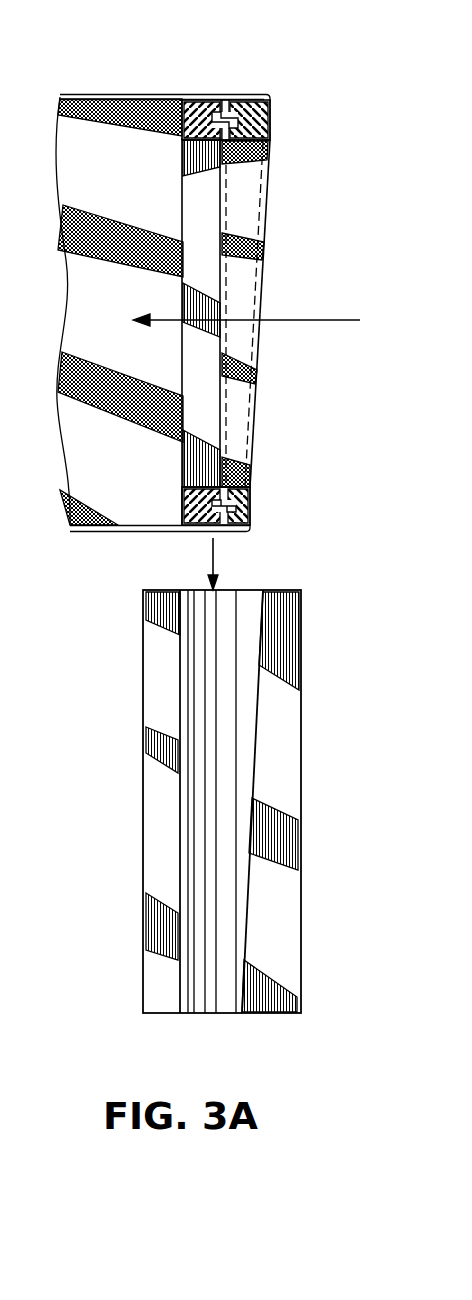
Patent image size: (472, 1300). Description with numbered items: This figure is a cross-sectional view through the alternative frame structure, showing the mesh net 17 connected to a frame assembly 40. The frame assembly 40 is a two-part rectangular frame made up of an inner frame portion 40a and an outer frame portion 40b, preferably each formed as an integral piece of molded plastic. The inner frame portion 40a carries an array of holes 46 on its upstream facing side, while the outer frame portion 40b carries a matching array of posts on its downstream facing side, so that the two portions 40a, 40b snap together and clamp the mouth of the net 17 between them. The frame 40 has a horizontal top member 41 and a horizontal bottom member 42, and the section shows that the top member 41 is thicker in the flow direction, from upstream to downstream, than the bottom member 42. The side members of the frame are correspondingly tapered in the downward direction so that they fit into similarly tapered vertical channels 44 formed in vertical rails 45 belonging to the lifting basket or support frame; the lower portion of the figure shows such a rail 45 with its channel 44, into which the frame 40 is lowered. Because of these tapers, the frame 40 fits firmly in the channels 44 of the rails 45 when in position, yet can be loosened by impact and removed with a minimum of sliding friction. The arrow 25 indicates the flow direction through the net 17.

The mesh net 17 is at (134, 189).
The direction arrow 25 is at (323, 320).
The frame assembly 40 is at (214, 270).
The inner frame portion 40a is at (186, 97).
The outer frame portion 40b is at (252, 97).
The top member 41 is at (277, 115).
The bottom member 42 is at (255, 506).
The vertical channels 44 is at (264, 605).
The vertical rails 45 is at (143, 703).
The array of holes 46 is at (208, 97).